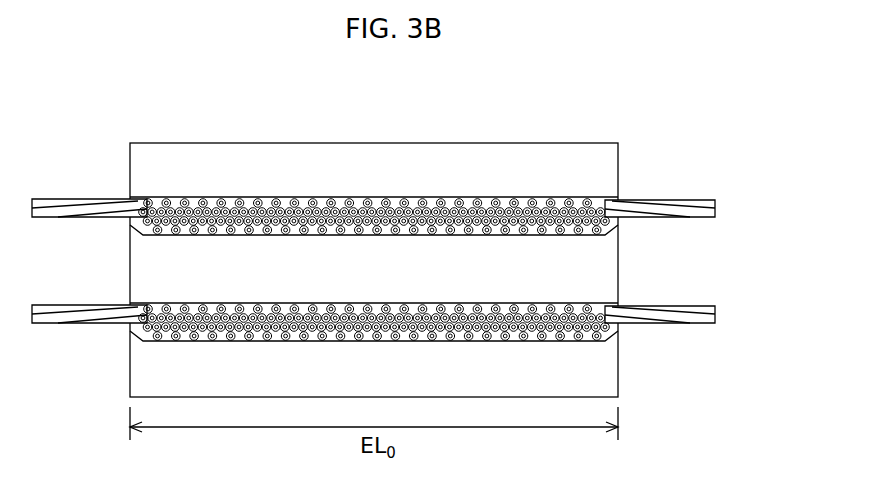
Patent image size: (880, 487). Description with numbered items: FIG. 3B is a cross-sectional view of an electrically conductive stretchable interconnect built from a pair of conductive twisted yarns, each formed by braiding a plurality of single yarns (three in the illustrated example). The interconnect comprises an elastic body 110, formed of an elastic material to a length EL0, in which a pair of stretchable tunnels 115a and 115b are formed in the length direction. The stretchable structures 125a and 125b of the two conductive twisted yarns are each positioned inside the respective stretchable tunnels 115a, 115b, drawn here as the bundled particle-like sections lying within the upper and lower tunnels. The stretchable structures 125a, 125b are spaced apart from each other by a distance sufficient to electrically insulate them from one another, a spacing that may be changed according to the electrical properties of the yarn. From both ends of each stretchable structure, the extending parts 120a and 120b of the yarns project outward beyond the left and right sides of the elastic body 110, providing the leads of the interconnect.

The elastic body 110 is at (549, 143).
The stretchable tunnel 115a is at (614, 228).
The stretchable tunnel 115b is at (615, 335).
The extending part 120a is at (52, 198).
The extending part 120b is at (52, 325).
The stretchable structure 125a is at (607, 240).
The stretchable structure 125b is at (607, 346).